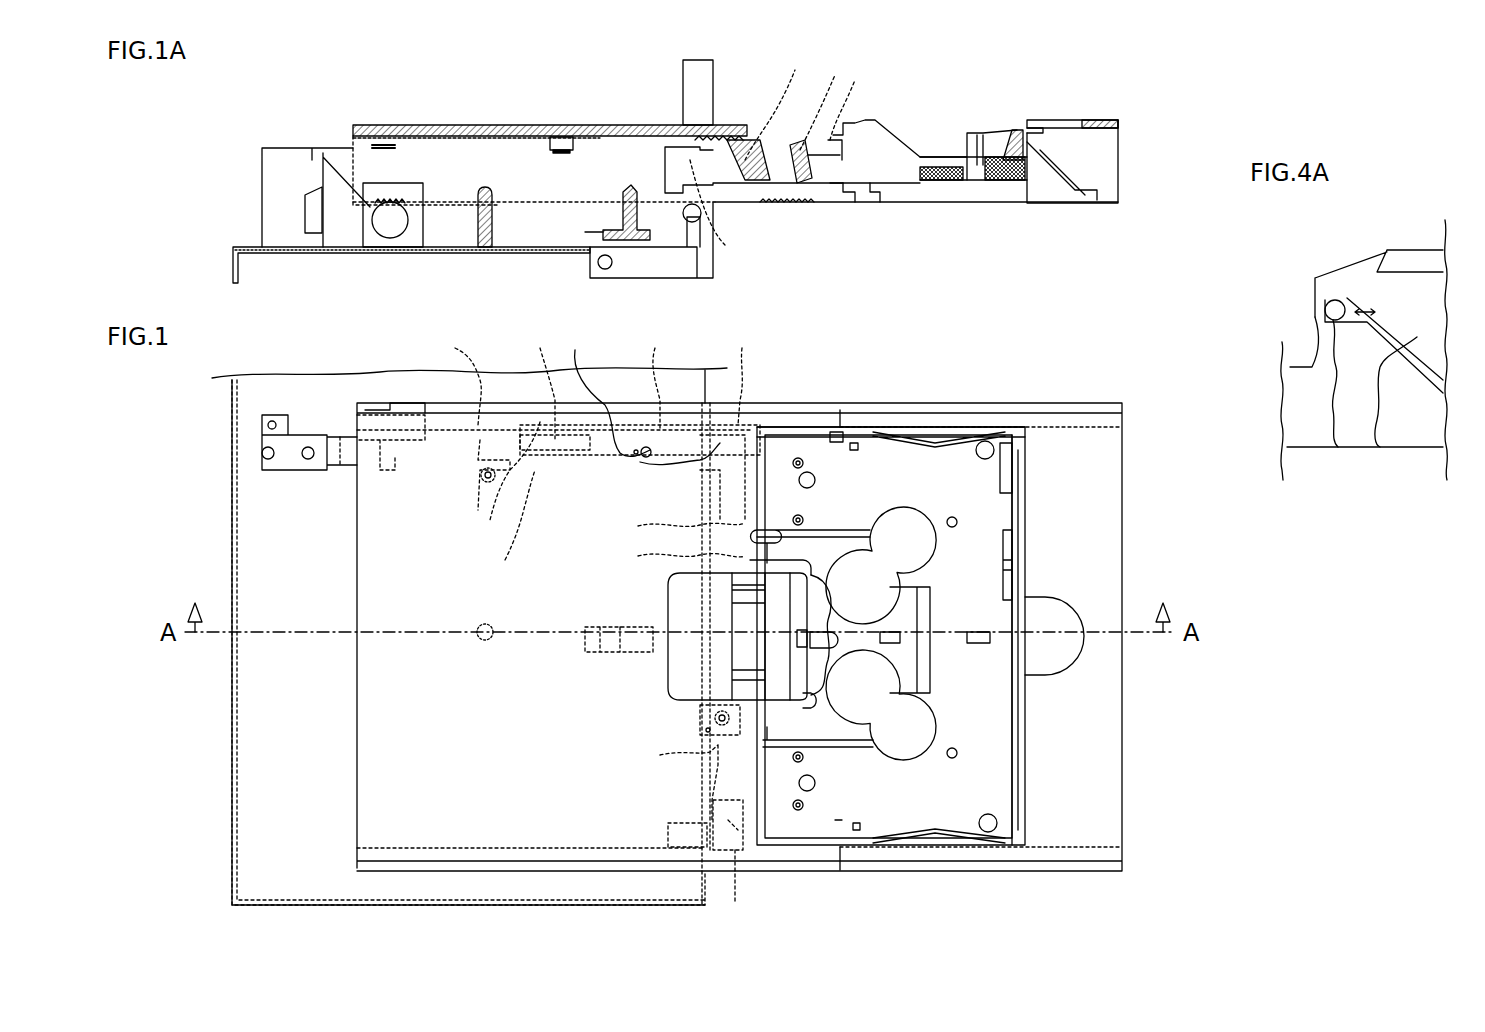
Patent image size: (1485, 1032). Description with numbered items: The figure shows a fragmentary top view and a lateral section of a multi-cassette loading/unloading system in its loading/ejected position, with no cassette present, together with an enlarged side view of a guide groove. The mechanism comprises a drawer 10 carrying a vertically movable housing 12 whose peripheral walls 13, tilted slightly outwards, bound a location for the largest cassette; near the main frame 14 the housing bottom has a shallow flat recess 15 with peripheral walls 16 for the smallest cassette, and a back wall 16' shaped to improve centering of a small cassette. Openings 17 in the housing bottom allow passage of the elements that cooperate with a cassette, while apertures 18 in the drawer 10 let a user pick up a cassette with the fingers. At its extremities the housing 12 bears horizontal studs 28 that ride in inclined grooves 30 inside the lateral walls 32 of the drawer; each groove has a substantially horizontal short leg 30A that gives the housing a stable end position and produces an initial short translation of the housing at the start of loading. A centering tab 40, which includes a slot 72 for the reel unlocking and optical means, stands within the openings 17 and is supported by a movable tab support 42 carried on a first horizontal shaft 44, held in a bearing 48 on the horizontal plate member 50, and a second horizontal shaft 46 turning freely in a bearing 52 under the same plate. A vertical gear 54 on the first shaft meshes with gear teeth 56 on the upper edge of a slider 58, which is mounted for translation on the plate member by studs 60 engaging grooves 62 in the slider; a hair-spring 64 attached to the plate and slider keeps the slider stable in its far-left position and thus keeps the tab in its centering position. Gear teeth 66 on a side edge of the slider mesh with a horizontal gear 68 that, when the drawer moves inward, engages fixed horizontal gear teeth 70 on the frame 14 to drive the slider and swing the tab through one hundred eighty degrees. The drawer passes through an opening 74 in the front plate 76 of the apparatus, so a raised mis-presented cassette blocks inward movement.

In FIG. 1A, the drawer 10 is at (1068, 110).
In FIG. 1, the drawer 10 is at (1080, 395).
In FIG. 1A, the housing 12 is at (918, 128).
In FIG. 1, the housing 12 is at (927, 455).
In FIG. 1, the peripheral walls 13 is at (957, 427).
In FIG. 1A, the main frame 14 is at (233, 270).
In FIG. 1, the main frame 14 is at (270, 512).
In FIG. 1, the recess 15 is at (920, 605).
In FIG. 1, the peripheral walls 16 is at (875, 635).
In FIG. 1, the back wall 16' is at (1060, 732).
In FIG. 1A, the openings 17 is at (843, 123).
In FIG. 1, the openings 17 is at (912, 538).
In FIG. 1, the apertures 18 is at (718, 660).
In FIG. 1A, the horizontal studs 28 is at (1003, 132).
In FIG. 4A, the horizontal studs 28 is at (1333, 375).
In FIG. 1A, the inclined grooves 30 is at (1056, 240).
In FIG. 4A, the inclined grooves 30 is at (1348, 445).
In FIG. 4A, the horizontal short leg 30A is at (1348, 245).
In FIG. 1A, the lateral walls 32 is at (1105, 160).
In FIG. 4A, the lateral walls 32 is at (1420, 440).
In FIG. 1, the lateral walls 32 is at (862, 408).
In FIG. 1A, the centering tab 40 is at (815, 195).
In FIG. 1, the centering tab 40 is at (805, 565).
In FIG. 1A, the movable tab support 42 is at (740, 188).
In FIG. 1, the movable tab support 42 is at (730, 583).
In FIG. 1A, the first horizontal shaft 44 is at (779, 94).
In FIG. 1, the first horizontal shaft 44 is at (672, 528).
In FIG. 1, the second horizontal shaft 46 is at (705, 690).
In FIG. 1, the bearing 48 is at (672, 558).
In FIG. 1A, the horizontal plate member 50 is at (478, 126).
In FIG. 1, the horizontal plate member 50 is at (400, 792).
In FIG. 1, the bearing 52 is at (681, 797).
In FIG. 1A, the vertical gear 54 is at (829, 89).
In FIG. 1, the vertical gear 54 is at (738, 422).
In FIG. 1A, the gear teeth 56 is at (730, 140).
In FIG. 1A, the slider 58 is at (600, 143).
In FIG. 1, the slider 58 is at (547, 387).
In FIG. 1, the studs 60 is at (670, 468).
In FIG. 1, the grooves 62 is at (550, 377).
In FIG. 1, the hair-spring 64 is at (610, 390).
In FIG. 1, the gear teeth 66 is at (510, 505).
In FIG. 1A, the horizontal gear 68 is at (555, 152).
In FIG. 1, the horizontal gear 68 is at (499, 528).
In FIG. 1A, the horizontal gear teeth 70 is at (385, 150).
In FIG. 1, the horizontal gear teeth 70 is at (388, 470).
In FIG. 1, the slot 72 is at (840, 650).
In FIG. 1A, the opening 74 is at (673, 219).
In FIG. 1, the opening 74 is at (749, 874).
In FIG. 1A, the front plate 76 is at (697, 86).